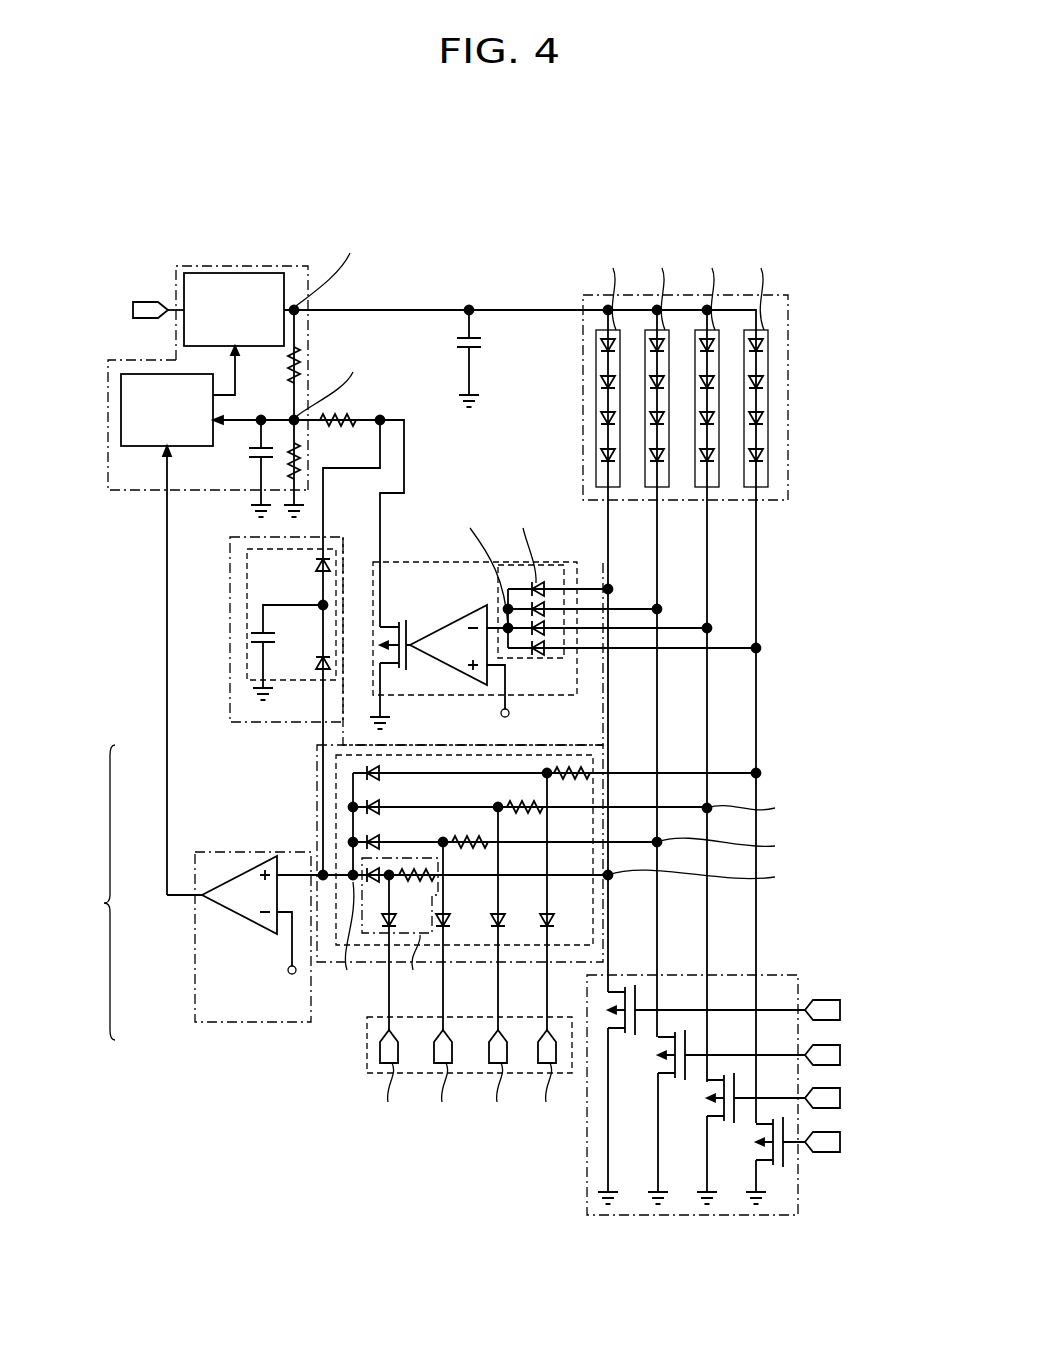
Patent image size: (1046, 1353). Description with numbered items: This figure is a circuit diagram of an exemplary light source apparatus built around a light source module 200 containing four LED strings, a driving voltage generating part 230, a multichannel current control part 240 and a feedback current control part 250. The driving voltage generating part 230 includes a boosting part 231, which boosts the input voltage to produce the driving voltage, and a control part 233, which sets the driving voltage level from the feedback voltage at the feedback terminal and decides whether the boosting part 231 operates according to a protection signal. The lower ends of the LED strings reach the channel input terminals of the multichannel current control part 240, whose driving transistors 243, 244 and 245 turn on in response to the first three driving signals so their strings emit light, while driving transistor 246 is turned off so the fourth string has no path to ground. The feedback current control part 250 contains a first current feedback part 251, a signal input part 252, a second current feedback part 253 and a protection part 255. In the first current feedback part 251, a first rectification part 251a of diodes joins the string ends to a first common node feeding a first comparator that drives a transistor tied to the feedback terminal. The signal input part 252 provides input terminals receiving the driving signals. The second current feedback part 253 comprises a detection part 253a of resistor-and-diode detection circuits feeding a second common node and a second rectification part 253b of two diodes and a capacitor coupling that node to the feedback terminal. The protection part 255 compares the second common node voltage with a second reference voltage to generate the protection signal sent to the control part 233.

The light source module 200 is at (788, 397).
The driving voltage generating part 230 is at (267, 266).
The boosting part 231 is at (216, 273).
The control part 233 is at (130, 447).
The multichannel current control part 240 is at (778, 975).
The driving transistor 243 is at (618, 990).
The driving transistor 244 is at (663, 1035).
The driving transistor 245 is at (712, 1080).
The driving transistor 246 is at (762, 1122).
The feedback current control part 250 is at (92, 892).
The first current feedback part 251 is at (372, 690).
The first rectification part 251a is at (558, 565).
The signal input part 252 is at (367, 1045).
The second current feedback part 253 is at (317, 817).
The detection part 253a is at (473, 947).
The second rectification part 253b is at (230, 598).
The protection part 255 is at (195, 943).